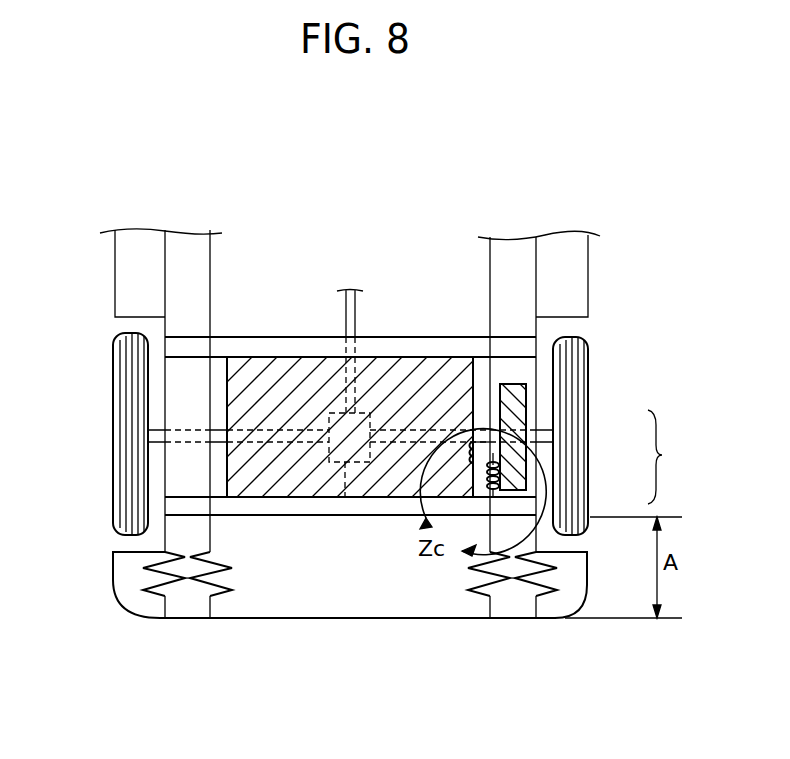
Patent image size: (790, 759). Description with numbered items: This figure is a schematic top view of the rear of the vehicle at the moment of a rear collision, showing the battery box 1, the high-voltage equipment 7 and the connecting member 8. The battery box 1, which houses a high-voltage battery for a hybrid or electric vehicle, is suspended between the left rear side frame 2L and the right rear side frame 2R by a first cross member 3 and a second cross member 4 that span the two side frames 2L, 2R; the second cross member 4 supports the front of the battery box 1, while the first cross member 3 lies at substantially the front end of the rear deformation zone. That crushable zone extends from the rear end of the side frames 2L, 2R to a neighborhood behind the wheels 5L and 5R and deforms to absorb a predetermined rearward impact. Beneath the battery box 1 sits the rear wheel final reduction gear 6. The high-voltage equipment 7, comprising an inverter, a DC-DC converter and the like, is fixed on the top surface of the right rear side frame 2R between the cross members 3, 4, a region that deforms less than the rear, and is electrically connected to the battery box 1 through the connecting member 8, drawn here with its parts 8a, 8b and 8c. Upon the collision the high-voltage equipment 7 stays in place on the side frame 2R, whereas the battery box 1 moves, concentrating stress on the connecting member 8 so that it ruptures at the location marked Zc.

The battery box 1 is at (396, 336).
The left rear side frame 2L is at (188, 246).
The right rear side frame 2R is at (510, 246).
The first cross member 3 is at (266, 500).
The second cross member 4 is at (520, 343).
The left wheel 5L is at (113, 345).
The right wheel 5R is at (588, 348).
The rear wheel final reduction gear 6 is at (345, 497).
The high-voltage equipment 7 is at (527, 392).
The connecting member 8 is at (664, 457).
The first coil 8a is at (476, 446).
The second coil 8b is at (500, 470).
The sensor base 8c is at (495, 492).